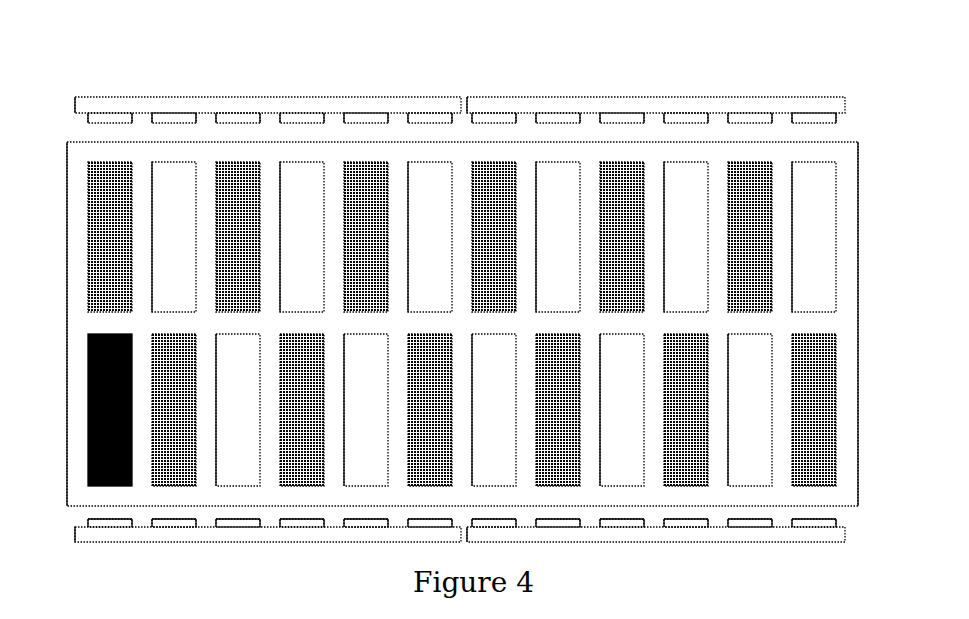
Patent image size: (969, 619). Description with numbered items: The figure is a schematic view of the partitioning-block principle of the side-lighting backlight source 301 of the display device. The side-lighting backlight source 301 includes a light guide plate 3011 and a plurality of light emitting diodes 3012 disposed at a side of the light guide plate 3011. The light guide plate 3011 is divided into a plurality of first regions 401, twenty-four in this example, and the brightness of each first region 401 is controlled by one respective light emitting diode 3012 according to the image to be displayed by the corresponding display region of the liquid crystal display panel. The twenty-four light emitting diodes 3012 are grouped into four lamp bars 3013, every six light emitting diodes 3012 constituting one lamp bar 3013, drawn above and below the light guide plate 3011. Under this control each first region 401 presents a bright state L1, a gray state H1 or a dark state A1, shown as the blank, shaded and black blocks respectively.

The side-lighting backlight source 301 is at (431, 74).
The lamp bar 3013 is at (110, 97).
The light emitting diode 3012 is at (88, 118).
The light guide plate 3011 is at (67, 319).
The first region 401 is at (836, 412).
The gray state H1 is at (88, 233).
The bright state L1 is at (836, 226).
The dark state A1 is at (88, 404).